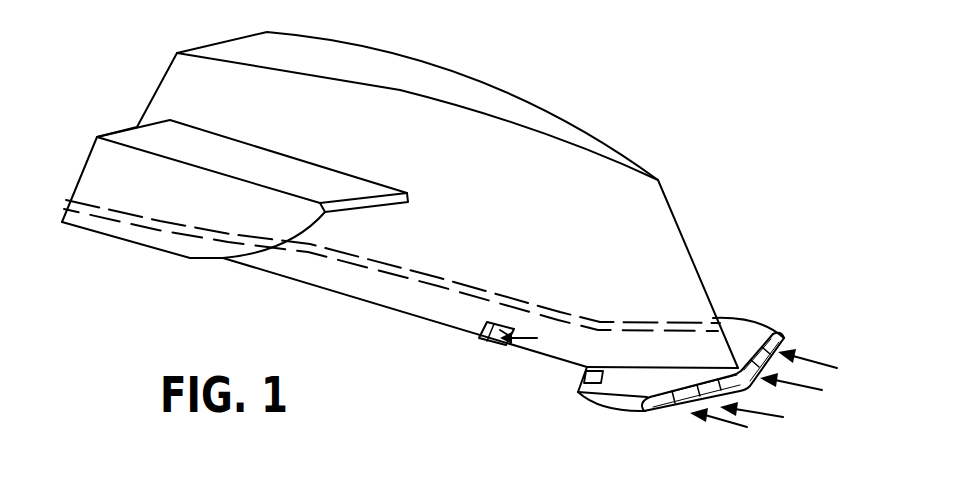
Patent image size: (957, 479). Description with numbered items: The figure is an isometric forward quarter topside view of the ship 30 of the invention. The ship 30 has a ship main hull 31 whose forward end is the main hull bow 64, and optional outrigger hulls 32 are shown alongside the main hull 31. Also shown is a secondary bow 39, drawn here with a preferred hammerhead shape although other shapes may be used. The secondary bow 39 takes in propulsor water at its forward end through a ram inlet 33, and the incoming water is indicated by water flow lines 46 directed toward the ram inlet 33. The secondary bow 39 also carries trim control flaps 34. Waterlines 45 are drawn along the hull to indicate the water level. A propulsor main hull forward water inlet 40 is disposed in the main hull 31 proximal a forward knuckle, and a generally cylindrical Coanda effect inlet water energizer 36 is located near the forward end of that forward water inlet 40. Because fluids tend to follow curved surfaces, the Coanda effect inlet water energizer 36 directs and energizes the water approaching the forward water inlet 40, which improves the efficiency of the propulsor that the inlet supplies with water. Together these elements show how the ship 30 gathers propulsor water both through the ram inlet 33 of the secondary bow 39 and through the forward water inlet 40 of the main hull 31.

The ship 30 is at (508, 207).
The ship main hull 31 is at (520, 263).
The outrigger hulls 32 is at (190, 207).
The ram inlet 33 is at (680, 402).
The trim control flaps 34 is at (582, 377).
The Coanda effect inlet water energizer 36 is at (495, 345).
The secondary bow 39 is at (634, 390).
The propulsor main hull forward water inlet 40 is at (480, 333).
The waterlines 45 is at (95, 210).
The water flow lines 46 is at (537, 338).
The main hull bow 64 is at (697, 258).